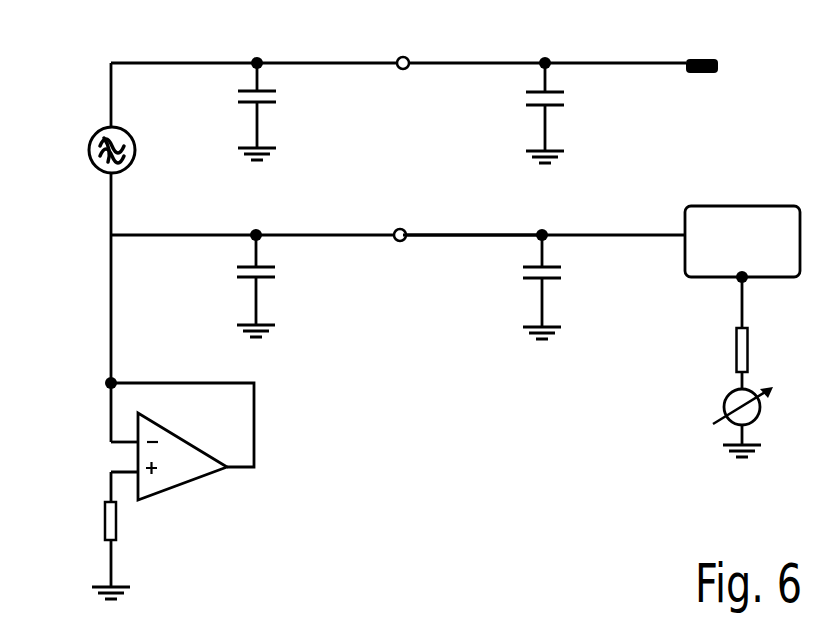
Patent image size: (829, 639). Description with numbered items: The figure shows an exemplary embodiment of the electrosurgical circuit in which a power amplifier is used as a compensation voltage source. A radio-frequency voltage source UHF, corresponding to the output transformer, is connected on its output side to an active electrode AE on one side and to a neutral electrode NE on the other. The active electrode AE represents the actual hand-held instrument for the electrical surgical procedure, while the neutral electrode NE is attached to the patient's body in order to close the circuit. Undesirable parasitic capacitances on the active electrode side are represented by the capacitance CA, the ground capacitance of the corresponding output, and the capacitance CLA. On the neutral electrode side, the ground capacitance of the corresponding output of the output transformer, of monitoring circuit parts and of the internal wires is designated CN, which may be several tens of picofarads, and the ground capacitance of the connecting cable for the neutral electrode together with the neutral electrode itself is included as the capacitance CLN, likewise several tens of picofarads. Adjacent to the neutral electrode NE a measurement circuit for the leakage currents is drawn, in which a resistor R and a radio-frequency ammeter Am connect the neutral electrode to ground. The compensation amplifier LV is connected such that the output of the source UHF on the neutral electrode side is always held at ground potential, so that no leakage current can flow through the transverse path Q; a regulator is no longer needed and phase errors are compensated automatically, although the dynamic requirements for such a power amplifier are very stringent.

The radio-frequency voltage source UHF is at (77, 176).
The capacitance CA is at (272, 108).
The capacitance CLA is at (567, 110).
The active electrode AE is at (705, 48).
The transverse path Q is at (455, 235).
The capacitance CN is at (272, 283).
The capacitance CLN is at (565, 284).
The neutral electrode NE is at (741, 225).
The resistor R is at (757, 333).
The radio-frequency ammeter Am is at (766, 422).
The compensation amplifier LV is at (173, 488).